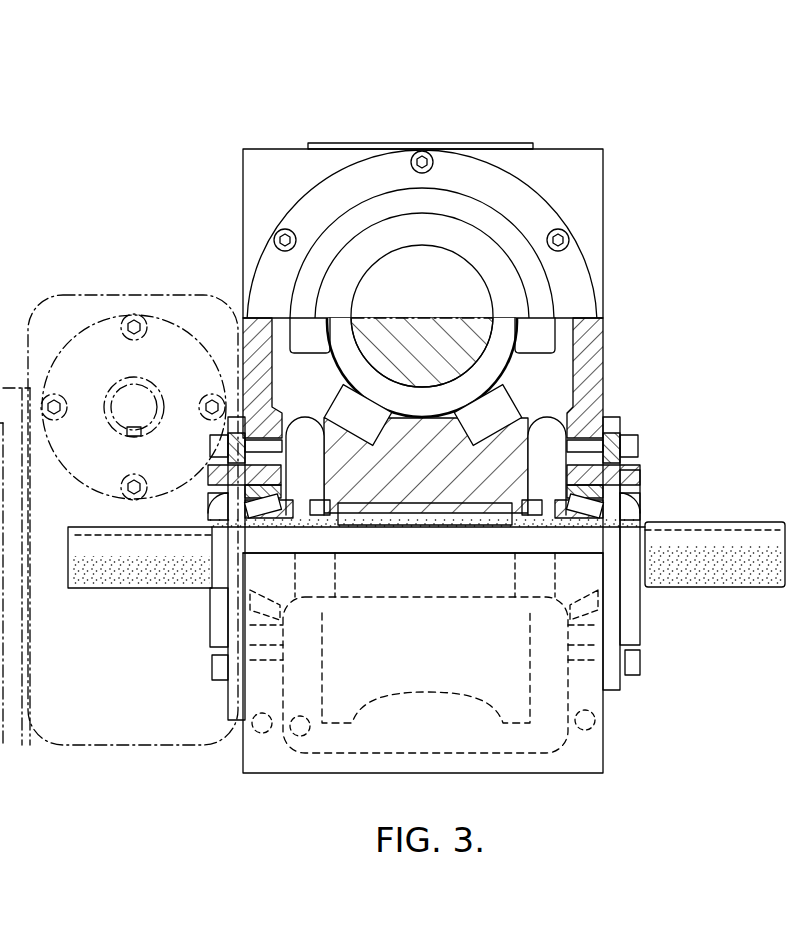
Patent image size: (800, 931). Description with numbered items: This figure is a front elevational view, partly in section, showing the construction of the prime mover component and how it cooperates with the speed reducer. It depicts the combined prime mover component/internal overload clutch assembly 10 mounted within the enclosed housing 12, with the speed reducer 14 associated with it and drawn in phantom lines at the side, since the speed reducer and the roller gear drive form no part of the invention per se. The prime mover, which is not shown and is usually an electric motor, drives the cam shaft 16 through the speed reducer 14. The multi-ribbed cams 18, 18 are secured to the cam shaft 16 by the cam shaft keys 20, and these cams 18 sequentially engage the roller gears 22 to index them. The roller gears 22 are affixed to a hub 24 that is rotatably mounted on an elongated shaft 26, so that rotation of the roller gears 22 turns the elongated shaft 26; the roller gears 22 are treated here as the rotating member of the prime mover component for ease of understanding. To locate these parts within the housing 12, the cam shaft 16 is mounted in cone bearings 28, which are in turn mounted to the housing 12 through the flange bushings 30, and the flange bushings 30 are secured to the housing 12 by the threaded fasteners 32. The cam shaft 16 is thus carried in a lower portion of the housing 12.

The combined prime mover component/internal overload clutch assembly 10 is at (607, 118).
The housing 12 is at (604, 156).
The speed reducer 14 is at (174, 298).
The cam shaft 16 is at (686, 543).
The multi-ribbed cams 18 is at (318, 424).
The cam shaft keys 20 is at (467, 500).
The roller gears 22 is at (346, 396).
The hub 24 is at (484, 374).
The elongated shaft 26 is at (453, 349).
The cone bearings 28 is at (250, 530).
The flange bushings 30 is at (208, 495).
The threaded fasteners 32 is at (638, 445).